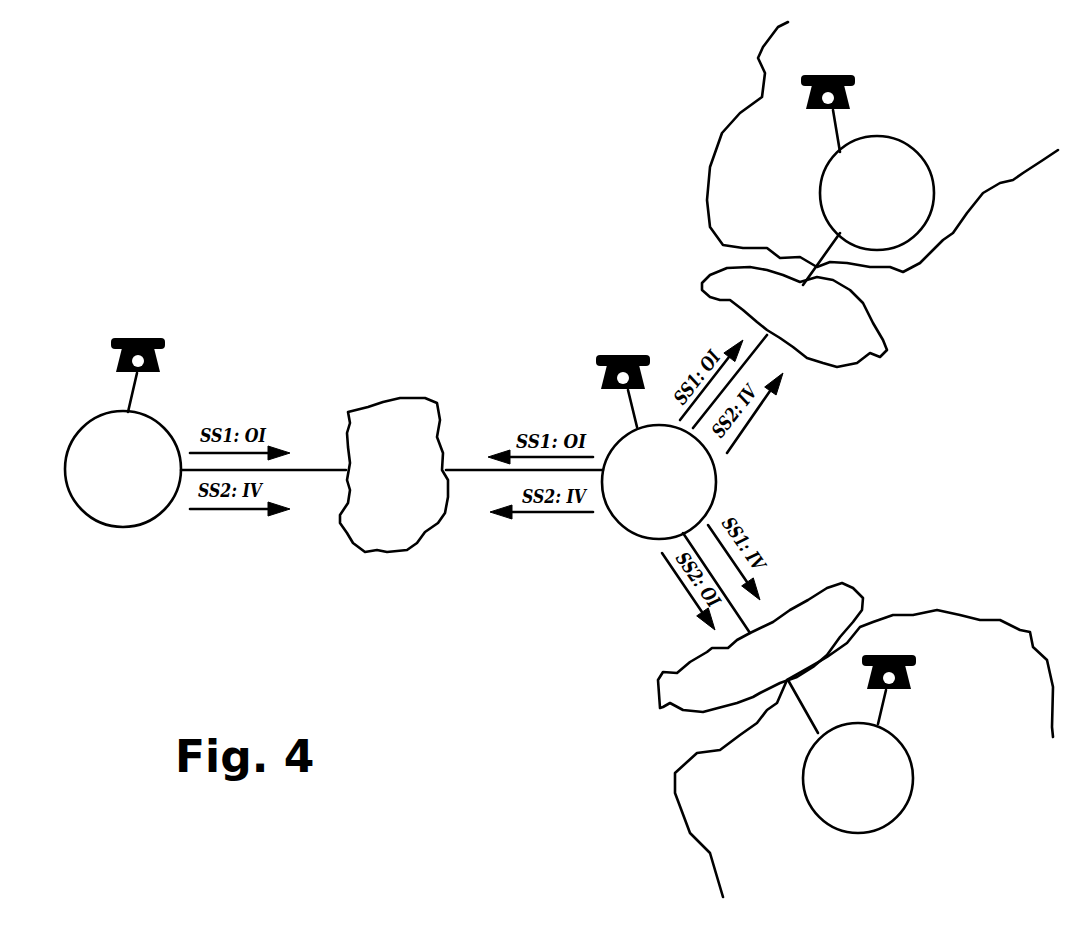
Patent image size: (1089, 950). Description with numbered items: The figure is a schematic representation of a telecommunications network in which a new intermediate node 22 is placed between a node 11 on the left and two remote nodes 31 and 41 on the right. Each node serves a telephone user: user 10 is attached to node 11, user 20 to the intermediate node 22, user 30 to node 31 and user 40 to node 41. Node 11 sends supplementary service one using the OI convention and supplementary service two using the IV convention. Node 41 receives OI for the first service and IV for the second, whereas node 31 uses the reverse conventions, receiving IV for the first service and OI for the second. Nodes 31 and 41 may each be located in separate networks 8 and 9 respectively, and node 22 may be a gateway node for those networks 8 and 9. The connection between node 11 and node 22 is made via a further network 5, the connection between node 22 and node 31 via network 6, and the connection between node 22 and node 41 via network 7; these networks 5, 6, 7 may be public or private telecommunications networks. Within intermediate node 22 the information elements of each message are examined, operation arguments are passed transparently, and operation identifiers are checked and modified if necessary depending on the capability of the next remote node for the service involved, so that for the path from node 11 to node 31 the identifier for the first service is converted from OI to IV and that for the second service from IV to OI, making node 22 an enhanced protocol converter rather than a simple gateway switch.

The network 5 is at (363, 538).
The network 6 is at (843, 583).
The network 7 is at (868, 352).
The network 8 is at (980, 642).
The network 9 is at (960, 183).
The user 10 is at (237, 338).
The node 11 is at (162, 538).
The user 20 is at (627, 345).
The intermediate node 22 is at (810, 510).
The user 30 is at (990, 698).
The node 31 is at (808, 748).
The user 40 is at (938, 73).
The node 41 is at (833, 165).